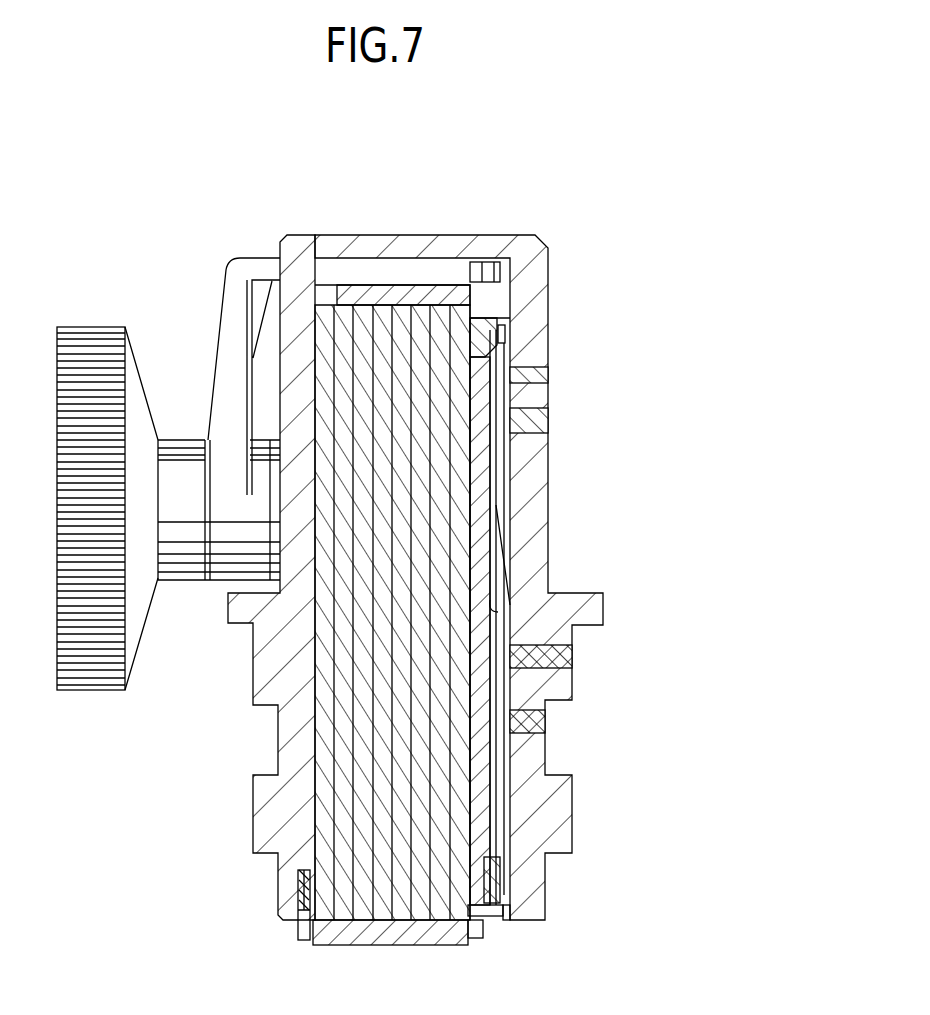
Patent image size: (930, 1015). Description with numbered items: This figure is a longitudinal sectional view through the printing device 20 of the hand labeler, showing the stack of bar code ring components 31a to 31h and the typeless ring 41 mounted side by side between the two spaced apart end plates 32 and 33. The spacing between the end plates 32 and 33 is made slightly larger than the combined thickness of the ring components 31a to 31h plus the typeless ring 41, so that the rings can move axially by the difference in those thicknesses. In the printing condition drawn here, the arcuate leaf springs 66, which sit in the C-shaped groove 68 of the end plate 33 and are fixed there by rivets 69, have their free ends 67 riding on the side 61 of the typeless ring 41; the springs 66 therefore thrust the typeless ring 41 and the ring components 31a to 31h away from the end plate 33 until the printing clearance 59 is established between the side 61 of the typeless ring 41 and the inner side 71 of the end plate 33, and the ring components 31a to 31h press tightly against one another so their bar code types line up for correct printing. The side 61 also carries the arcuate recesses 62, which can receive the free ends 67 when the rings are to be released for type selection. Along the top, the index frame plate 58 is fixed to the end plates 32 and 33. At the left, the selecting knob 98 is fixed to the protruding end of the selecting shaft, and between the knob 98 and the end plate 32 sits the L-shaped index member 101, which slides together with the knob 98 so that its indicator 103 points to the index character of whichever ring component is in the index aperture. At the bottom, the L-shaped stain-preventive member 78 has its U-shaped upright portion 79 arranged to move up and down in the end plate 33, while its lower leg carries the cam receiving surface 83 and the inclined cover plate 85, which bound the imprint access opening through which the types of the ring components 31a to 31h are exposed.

The printing device 20 is at (530, 211).
The end plate 32 is at (305, 246).
The L-shaped index member 101 is at (374, 268).
The index frame plate 58 is at (419, 246).
The indicator 103 is at (479, 268).
The end plate 33 is at (528, 276).
The inner side of end plate 71 is at (507, 303).
The side of typeless ring 61 is at (510, 326).
The rivet 69 is at (538, 386).
The arcuate recess 62 is at (538, 429).
The C-shaped groove 68 is at (520, 490).
The free end of leaf spring 67 is at (508, 548).
The leaf spring 66 is at (510, 588).
The typeless ring 41 is at (522, 771).
The printing clearance 59 is at (492, 876).
The U-shaped upright portion 79 is at (507, 904).
The cam receiving surface 83 is at (492, 918).
The cover plate 85 is at (474, 940).
The ring component 31h is at (453, 943).
The ring component 31a is at (325, 947).
The stain-preventive member 78 is at (292, 930).
The selecting knob 98 is at (95, 689).